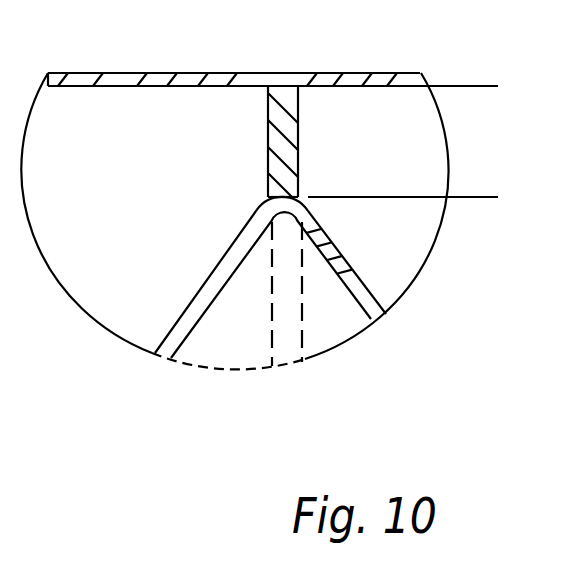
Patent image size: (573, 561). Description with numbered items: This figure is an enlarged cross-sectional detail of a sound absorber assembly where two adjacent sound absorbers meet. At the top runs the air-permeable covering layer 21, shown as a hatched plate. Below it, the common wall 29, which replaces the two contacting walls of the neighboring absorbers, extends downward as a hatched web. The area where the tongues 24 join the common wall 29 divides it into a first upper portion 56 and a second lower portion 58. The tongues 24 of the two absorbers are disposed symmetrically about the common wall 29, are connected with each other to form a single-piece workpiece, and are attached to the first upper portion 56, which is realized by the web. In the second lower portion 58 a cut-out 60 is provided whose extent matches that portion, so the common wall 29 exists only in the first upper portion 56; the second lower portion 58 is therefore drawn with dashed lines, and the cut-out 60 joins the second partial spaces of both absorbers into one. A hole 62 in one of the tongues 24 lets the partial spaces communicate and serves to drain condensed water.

The covering layer 21 is at (101, 82).
The common wall 29 is at (296, 129).
The first upper portion 56 is at (270, 143).
The tongue 24 is at (370, 291).
The hole 62 is at (336, 255).
The second lower portion 58 is at (288, 320).
The cut-out 60 is at (287, 280).